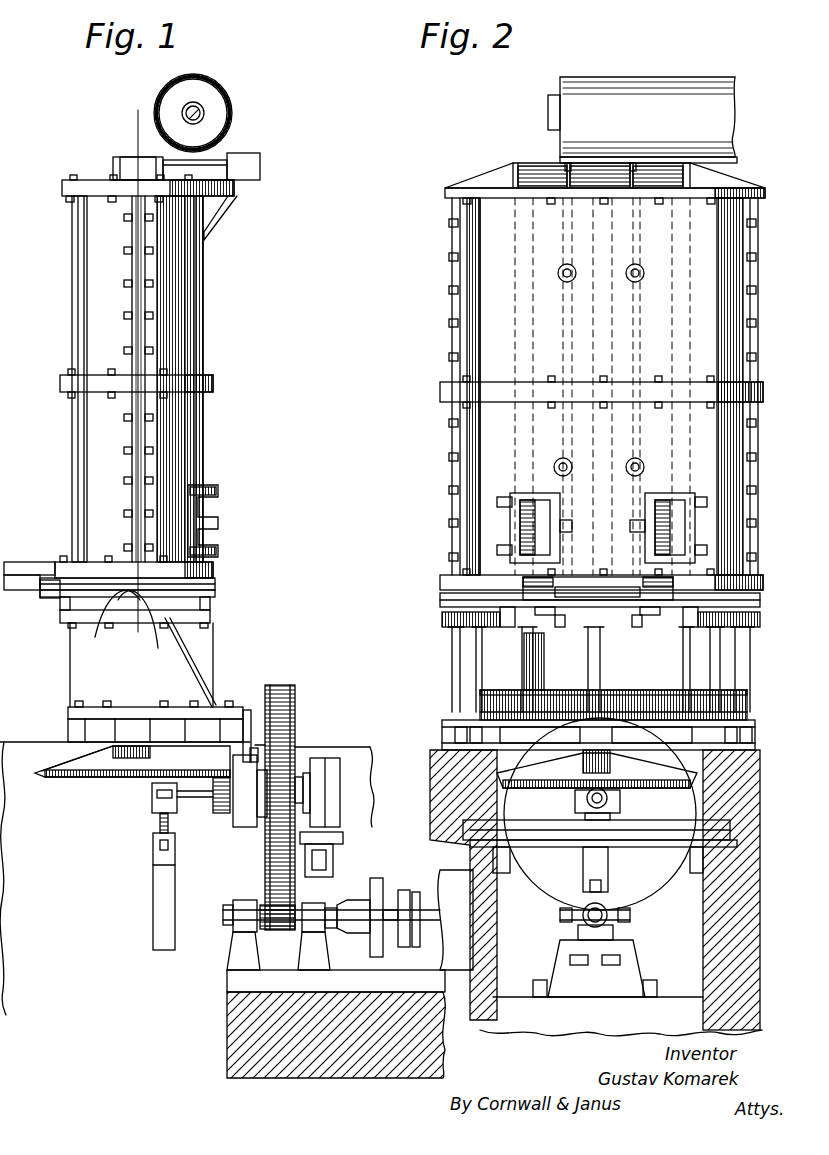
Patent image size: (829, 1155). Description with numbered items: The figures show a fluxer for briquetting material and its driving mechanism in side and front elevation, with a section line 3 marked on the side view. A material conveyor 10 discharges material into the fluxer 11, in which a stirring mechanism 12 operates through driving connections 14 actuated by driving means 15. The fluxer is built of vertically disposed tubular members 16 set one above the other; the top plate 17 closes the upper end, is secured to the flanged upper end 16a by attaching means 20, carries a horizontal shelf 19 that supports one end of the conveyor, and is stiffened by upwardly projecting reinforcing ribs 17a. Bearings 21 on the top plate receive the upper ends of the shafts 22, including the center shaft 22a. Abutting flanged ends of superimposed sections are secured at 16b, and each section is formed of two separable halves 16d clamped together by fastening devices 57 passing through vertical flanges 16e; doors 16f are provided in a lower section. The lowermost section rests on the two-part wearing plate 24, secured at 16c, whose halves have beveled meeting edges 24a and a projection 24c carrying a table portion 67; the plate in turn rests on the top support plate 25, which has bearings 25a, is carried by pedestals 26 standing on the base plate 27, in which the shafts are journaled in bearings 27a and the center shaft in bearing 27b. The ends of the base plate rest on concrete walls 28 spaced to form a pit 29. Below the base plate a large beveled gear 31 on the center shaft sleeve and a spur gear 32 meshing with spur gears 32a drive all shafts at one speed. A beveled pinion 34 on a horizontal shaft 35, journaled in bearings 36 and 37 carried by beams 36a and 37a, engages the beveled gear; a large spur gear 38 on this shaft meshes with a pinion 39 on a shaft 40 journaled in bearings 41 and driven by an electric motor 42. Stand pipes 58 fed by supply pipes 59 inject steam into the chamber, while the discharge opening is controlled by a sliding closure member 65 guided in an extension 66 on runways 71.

In FIG. 1, the section line 3- 3 is at (132, 383).
In FIG. 1, the material conveyor 10 is at (232, 108).
In FIG. 2, the material conveyor 10 is at (642, 124).
In FIG. 1, the fluxer 11 is at (210, 294).
In FIG. 2, the stirring mechanism 12 is at (514, 338).
In FIG. 1, the driving connections 14 is at (265, 686).
In FIG. 2, the driving connections 14 is at (533, 798).
In FIG. 1, the actuating means 15 is at (226, 927).
In FIG. 2, the actuating means 15 is at (588, 970).
In FIG. 1, the tubular members 16 is at (80, 292).
In FIG. 2, the tubular members 16 is at (483, 273).
In FIG. 1, the flanged upper end 16a is at (95, 203).
In FIG. 2, the flanged upper end 16a is at (450, 197).
In FIG. 1, the secured abutting flanged ends 16b is at (213, 571).
In FIG. 2, the secured abutting flanged ends 16b is at (477, 577).
In FIG. 1, the securing of lowermost section 16c is at (58, 382).
In FIG. 2, the securing of lowermost section 16c is at (437, 390).
In FIG. 1, the column panel 16d is at (195, 260).
In FIG. 1, the vertically disposed flanges 16e is at (200, 328).
In FIG. 2, the vertically disposed flanges 16e is at (448, 367).
In FIG. 1, the doors 16f is at (213, 530).
In FIG. 2, the doors 16f is at (528, 523).
In FIG. 1, the top plate 17 is at (240, 188).
In FIG. 2, the top plate 17 is at (450, 188).
In FIG. 1, the reinforcing ribs 17a is at (88, 183).
In FIG. 2, the reinforcing ribs 17a is at (533, 173).
In FIG. 1, the shelf 19 is at (240, 186).
In FIG. 1, the attaching means 20 is at (66, 197).
In FIG. 2, the attaching means 20 is at (705, 204).
In FIG. 1, the bearings 21 is at (118, 160).
In FIG. 2, the shafts 22 is at (465, 682).
In FIG. 2, the center shaft 22a is at (592, 663).
In FIG. 1, the wearing plate 24 is at (67, 566).
In FIG. 2, the wearing plate 24 is at (445, 585).
In FIG. 1, the beveled meeting edges 24a is at (132, 629).
In FIG. 1, the projection 24c is at (110, 626).
In FIG. 2, the projection 24c is at (578, 641).
In FIG. 1, the top support plate 25 is at (213, 597).
In FIG. 2, the top support plate 25 is at (457, 607).
In FIG. 2, the bearings 25a is at (507, 630).
In FIG. 1, the pedestal 26 is at (78, 665).
In FIG. 2, the pedestal 26 is at (460, 672).
In FIG. 1, the base plate 27 is at (68, 725).
In FIG. 2, the base plate 27 is at (598, 746).
In FIG. 2, the bearings 27a is at (500, 720).
In FIG. 2, the bearing 27b is at (690, 720).
In FIG. 1, the concrete walls 28 is at (187, 878).
In FIG. 2, the concrete walls 28 is at (437, 772).
In FIG. 2, the pit 29 is at (508, 890).
In FIG. 1, the beveled gear 31 is at (90, 777).
In FIG. 2, the beveled gear 31 is at (677, 783).
In FIG. 2, the spur gear 32 is at (613, 695).
In FIG. 2, the spur gears 32a is at (490, 707).
In FIG. 1, the beveled pinion 34 is at (220, 813).
In FIG. 2, the beveled pinion 34 is at (573, 787).
In FIG. 1, the shaft 35 is at (200, 793).
In FIG. 2, the shaft 35 is at (603, 803).
In FIG. 1, the bearing 36 is at (152, 795).
In FIG. 2, the bearing 36 is at (570, 840).
In FIG. 1, the beam 36a is at (158, 823).
In FIG. 2, the beam 36a is at (633, 877).
In FIG. 1, the bearing 37 is at (325, 767).
In FIG. 1, the beam 37a is at (335, 857).
In FIG. 1, the spur gear 38 is at (292, 705).
In FIG. 2, the spur gear 38 is at (570, 936).
In FIG. 1, the pinion 39 is at (263, 906).
In FIG. 1, the shaft 40 is at (386, 924).
In FIG. 2, the shaft 40 is at (623, 937).
In FIG. 1, the bearings 41 is at (300, 950).
In FIG. 2, the bearings 41 is at (582, 968).
In FIG. 1, the electric motor 42 is at (448, 880).
In FIG. 1, the fastening devices 57 is at (125, 350).
In FIG. 2, the fastening devices 57 is at (452, 323).
In FIG. 2, the stand pipes 58 is at (633, 337).
In FIG. 2, the supply pipe 59 is at (567, 264).
In FIG. 2, the closure member 65 is at (577, 590).
In FIG. 1, the extension 66 is at (33, 592).
In FIG. 2, the extension 66 is at (650, 603).
In FIG. 2, the table portion 67 is at (583, 593).
In FIG. 2, the runways 71 is at (601, 630).